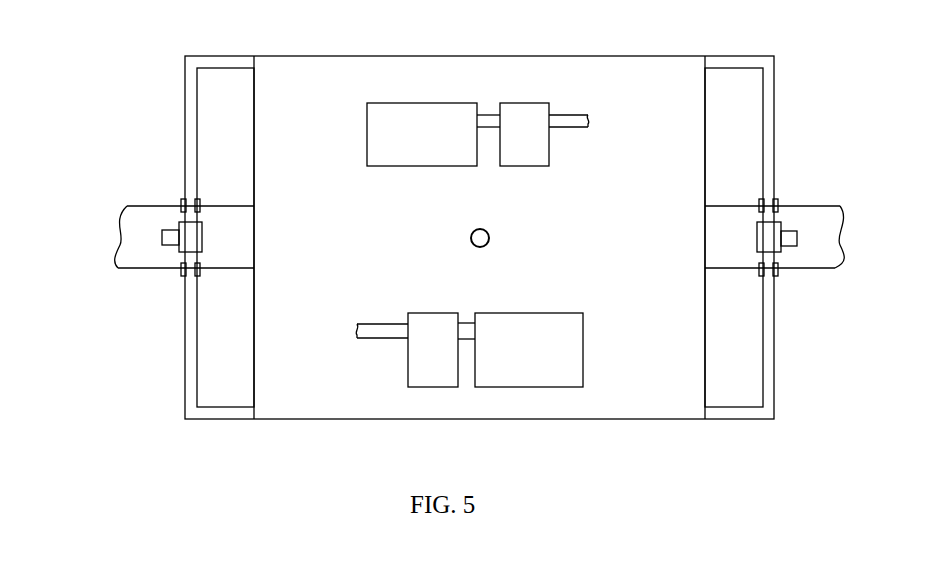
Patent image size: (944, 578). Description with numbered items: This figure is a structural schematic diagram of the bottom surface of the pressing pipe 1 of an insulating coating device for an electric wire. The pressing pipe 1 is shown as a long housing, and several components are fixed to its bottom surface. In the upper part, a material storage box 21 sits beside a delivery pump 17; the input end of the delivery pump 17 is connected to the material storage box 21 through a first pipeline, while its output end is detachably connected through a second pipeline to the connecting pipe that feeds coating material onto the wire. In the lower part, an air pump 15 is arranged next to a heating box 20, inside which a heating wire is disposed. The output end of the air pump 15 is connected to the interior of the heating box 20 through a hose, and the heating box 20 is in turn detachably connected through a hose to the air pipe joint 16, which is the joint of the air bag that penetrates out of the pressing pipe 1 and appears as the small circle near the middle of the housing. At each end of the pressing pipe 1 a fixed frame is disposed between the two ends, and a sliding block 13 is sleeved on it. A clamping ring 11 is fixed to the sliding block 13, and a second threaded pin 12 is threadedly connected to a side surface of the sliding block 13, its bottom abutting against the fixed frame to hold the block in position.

The pressing pipe 1 is at (553, 72).
The clamping ring 11 is at (183, 203).
The second threaded pin 12 is at (167, 238).
The sliding block 13 is at (190, 237).
The air pump 15 is at (532, 370).
The air pipe joint 16 is at (476, 231).
The delivery pump 17 is at (525, 132).
The heating box 20 is at (432, 365).
The material storage box 21 is at (397, 147).